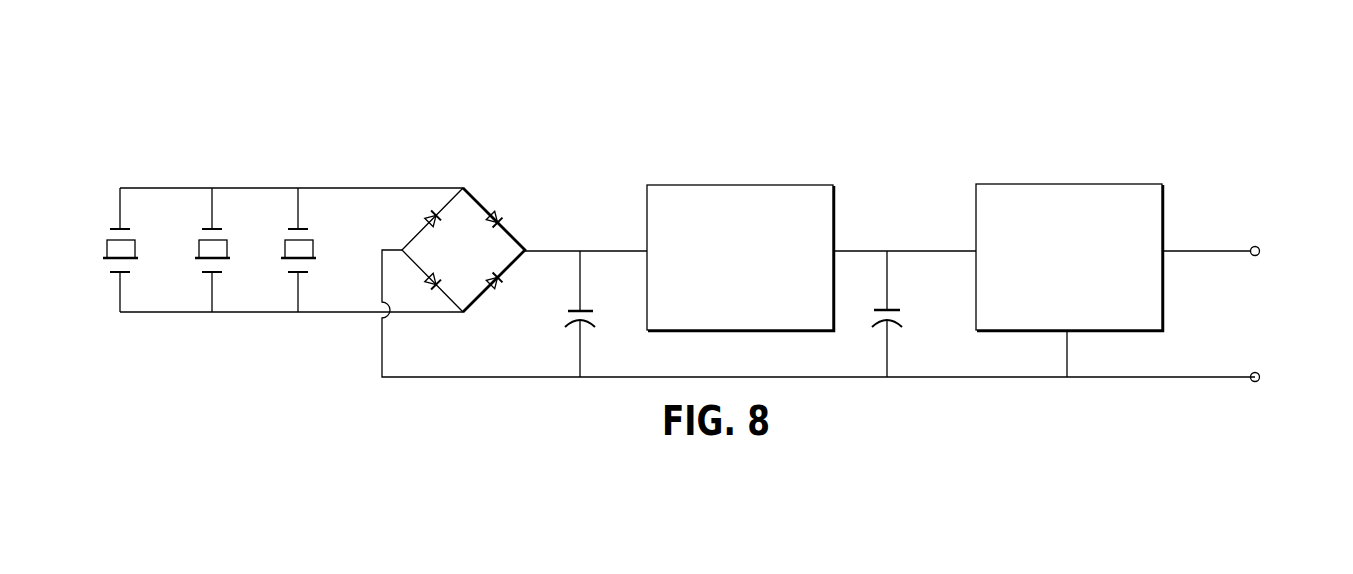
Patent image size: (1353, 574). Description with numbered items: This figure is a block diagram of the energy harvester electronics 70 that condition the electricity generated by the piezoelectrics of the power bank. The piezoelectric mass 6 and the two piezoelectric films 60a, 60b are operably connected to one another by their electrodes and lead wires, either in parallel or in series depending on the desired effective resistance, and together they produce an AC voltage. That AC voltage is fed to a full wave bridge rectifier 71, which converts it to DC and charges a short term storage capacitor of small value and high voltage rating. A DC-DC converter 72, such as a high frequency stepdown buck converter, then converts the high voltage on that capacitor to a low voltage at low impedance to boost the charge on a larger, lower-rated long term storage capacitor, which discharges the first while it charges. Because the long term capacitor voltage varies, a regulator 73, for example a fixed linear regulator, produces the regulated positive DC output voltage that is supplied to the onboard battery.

The piezoelectric mass 6 is at (105, 258).
The piezoelectric film 60a is at (223, 253).
The piezoelectric film 60b is at (293, 253).
The energy harvester electronics 70 is at (584, 194).
The full wave bridge rectifier 71 is at (473, 195).
The DC-DC converter 72 is at (738, 185).
The regulator 73 is at (1067, 184).